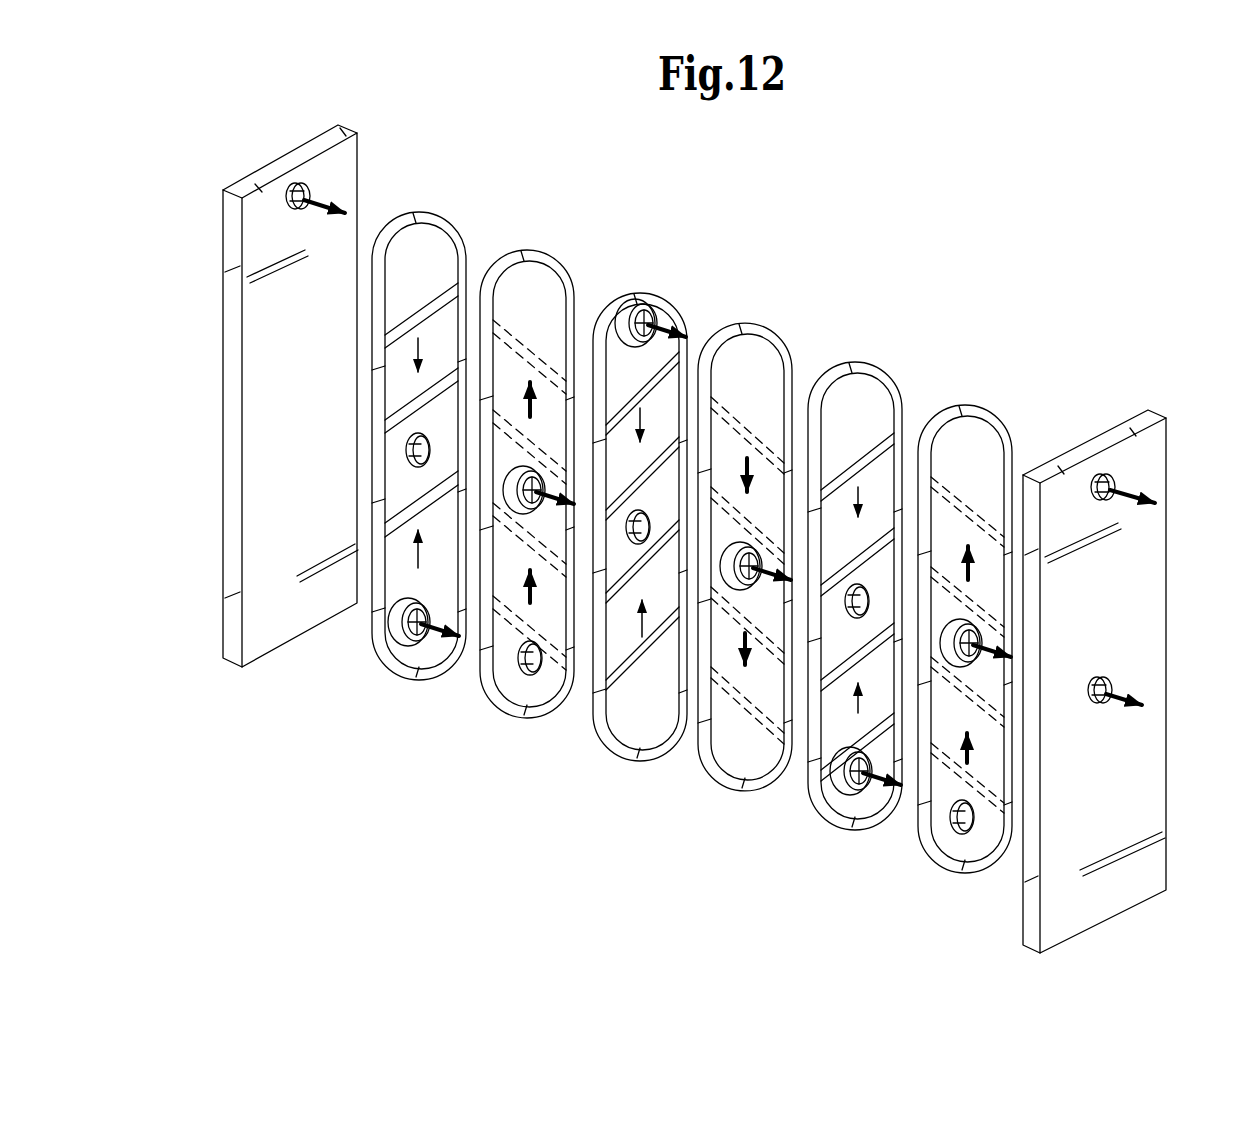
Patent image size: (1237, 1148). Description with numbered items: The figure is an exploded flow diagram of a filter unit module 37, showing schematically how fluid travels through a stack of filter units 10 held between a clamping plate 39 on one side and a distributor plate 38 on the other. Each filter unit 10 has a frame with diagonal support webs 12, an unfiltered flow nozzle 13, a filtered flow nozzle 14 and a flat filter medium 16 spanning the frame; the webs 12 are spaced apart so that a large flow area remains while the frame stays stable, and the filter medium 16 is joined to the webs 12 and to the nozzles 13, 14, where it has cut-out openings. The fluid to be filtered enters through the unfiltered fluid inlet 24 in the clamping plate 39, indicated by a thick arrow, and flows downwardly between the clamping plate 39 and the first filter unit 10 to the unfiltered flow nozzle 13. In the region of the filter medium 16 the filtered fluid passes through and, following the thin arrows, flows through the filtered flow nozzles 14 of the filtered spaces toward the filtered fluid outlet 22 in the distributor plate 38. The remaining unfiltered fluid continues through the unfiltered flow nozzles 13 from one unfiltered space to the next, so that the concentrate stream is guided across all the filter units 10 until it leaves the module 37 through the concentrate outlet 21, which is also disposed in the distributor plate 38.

The filter unit 10 is at (685, 520).
The support webs 12 is at (400, 322).
The unfiltered flow nozzle 13 is at (418, 642).
The filtered flow nozzle 14 is at (533, 478).
The filter medium 16 is at (413, 234).
The concentrate outlet 21 is at (1101, 474).
The filtered fluid outlet 22 is at (1113, 679).
The unfiltered fluid inlet 24 is at (297, 186).
The filter unit module 37 is at (855, 251).
The distributor plate 38 is at (1121, 680).
The clamping plate 39 is at (268, 396).